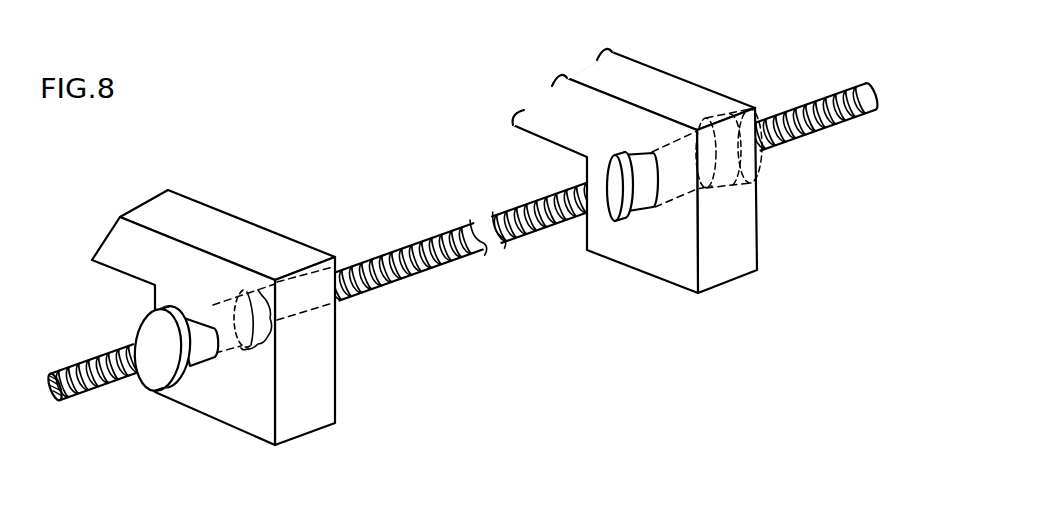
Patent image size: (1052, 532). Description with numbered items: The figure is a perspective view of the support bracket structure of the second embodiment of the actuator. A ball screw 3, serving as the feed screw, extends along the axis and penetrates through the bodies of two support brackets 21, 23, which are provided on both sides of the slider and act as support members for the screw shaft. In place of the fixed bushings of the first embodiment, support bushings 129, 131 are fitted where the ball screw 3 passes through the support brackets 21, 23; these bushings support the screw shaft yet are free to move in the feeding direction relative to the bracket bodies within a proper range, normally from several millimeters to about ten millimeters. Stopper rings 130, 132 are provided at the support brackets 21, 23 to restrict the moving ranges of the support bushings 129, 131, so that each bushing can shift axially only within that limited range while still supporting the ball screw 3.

The ball screw 3 is at (423, 241).
The support bracket 21 is at (239, 216).
The support bracket 23 is at (677, 78).
The support bushing 129 is at (158, 396).
The stopper ring 130 is at (258, 350).
The support bushing 131 is at (638, 205).
The stopper ring 132 is at (617, 214).